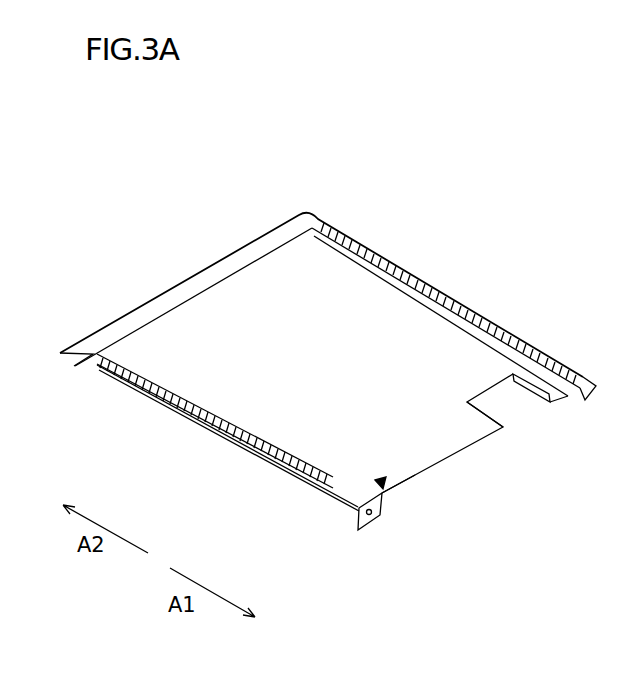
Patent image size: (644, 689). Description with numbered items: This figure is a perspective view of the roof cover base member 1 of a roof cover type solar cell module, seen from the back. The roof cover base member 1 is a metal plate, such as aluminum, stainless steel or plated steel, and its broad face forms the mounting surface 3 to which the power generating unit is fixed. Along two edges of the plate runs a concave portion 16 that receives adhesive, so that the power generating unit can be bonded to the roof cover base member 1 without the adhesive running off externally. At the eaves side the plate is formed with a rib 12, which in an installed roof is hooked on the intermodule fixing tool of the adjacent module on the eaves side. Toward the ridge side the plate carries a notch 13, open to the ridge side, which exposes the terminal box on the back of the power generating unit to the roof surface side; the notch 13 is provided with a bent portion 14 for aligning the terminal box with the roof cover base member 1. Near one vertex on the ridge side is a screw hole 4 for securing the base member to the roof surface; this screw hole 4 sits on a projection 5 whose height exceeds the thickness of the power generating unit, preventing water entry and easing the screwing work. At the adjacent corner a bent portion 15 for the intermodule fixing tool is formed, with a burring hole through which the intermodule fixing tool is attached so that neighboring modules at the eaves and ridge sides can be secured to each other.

The roof cover base member 1 is at (473, 343).
The mounting surface 3 is at (360, 305).
The screw hole 4 is at (386, 480).
The projection 5 is at (380, 487).
The rib 12 is at (73, 367).
The notch 13 is at (503, 402).
The bent portion 14 is at (530, 395).
The bent portion for intermodule fixing tool 15 is at (370, 525).
The concave portion 16 is at (437, 300).